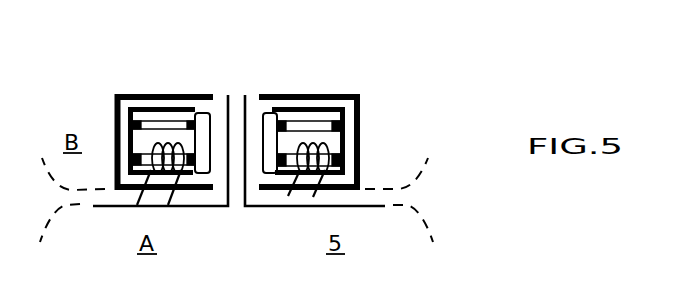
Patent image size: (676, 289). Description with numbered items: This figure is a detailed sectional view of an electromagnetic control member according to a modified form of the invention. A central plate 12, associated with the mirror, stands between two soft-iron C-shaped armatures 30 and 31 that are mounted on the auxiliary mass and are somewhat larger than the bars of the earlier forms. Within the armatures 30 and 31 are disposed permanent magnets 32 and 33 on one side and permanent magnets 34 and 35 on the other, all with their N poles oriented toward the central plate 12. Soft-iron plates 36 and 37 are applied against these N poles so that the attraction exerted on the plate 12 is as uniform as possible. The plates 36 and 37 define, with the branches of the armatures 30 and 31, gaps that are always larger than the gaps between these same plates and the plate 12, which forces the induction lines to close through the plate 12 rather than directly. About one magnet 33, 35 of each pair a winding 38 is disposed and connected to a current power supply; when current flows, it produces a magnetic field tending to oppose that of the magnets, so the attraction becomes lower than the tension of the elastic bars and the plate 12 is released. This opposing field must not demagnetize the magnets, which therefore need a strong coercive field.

The plate 12 is at (236, 182).
The C-shaped armature 30 is at (120, 121).
The C-shaped armature 31 is at (358, 128).
The permanent magnet 32 is at (151, 122).
The permanent magnet 33 is at (150, 157).
The permanent magnet 34 is at (318, 124).
The permanent magnet 35 is at (330, 156).
The plate of soft iron 36 is at (202, 124).
The plate of soft iron 37 is at (270, 127).
The winding 38 is at (137, 199).